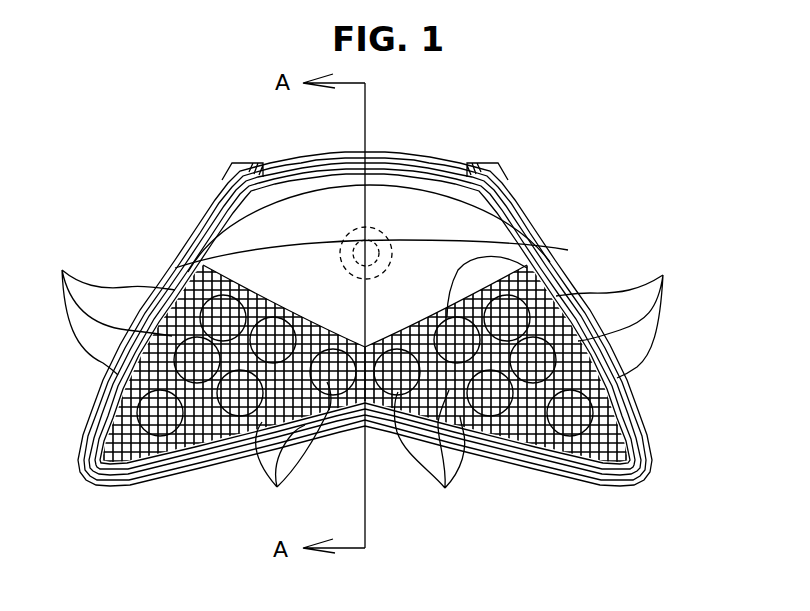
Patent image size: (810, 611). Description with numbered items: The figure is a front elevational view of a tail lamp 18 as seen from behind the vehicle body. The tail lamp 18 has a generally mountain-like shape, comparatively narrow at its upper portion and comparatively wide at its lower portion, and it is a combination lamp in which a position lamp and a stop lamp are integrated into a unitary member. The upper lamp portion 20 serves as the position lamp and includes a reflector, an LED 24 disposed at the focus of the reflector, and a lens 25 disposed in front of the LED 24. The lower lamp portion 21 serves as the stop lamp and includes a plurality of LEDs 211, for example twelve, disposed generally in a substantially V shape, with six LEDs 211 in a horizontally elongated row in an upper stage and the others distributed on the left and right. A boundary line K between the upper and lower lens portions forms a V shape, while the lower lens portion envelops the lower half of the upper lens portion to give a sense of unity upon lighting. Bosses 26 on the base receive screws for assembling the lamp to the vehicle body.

The tail lamp 18 is at (650, 383).
The upper lamp portion 20 is at (460, 232).
The lower lamp portion 21 is at (642, 428).
The LED 24 is at (387, 236).
The lens 25 is at (393, 240).
The boss 26 is at (238, 162).
The LEDs 211 is at (360, 379).
The boundary line K is at (517, 250).